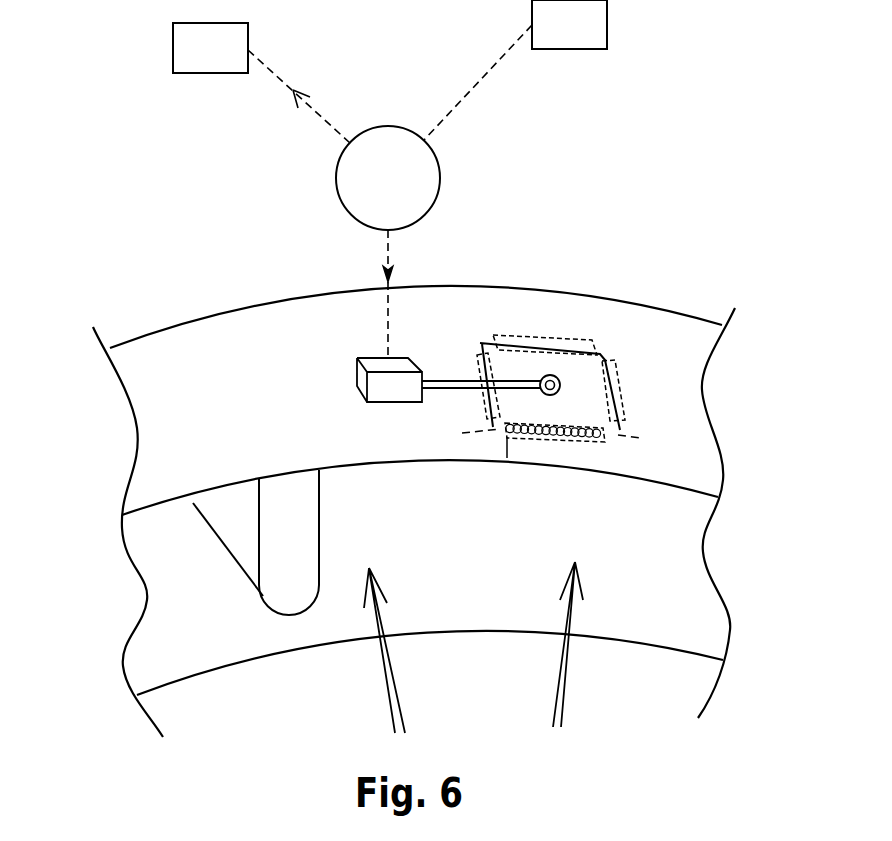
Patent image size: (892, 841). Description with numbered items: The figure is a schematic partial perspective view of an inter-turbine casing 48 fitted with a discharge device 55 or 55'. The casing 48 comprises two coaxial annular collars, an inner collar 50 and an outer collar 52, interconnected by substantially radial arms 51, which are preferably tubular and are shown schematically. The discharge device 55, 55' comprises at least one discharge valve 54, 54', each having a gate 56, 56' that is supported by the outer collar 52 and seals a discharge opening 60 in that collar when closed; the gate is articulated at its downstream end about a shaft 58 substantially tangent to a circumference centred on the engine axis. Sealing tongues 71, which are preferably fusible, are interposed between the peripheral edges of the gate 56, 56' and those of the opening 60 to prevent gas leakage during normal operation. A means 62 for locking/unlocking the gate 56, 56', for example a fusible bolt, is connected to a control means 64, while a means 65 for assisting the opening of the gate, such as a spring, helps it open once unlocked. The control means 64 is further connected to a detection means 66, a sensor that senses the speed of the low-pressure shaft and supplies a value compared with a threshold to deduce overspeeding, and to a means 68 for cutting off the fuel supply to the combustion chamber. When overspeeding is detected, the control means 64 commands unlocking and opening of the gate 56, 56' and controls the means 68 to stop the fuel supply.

The inter-turbine casing 48 is at (414, 494).
The inner collar 50 is at (213, 633).
The radial arms 51 is at (297, 585).
The outer collar 52 is at (258, 345).
The discharge valve 54 is at (545, 282).
The discharge valve 54' is at (628, 324).
The discharge device 55 is at (301, 191).
The discharge device 55' is at (301, 191).
The gate 56 is at (640, 386).
The gate 56' is at (640, 386).
The shaft 58 is at (620, 357).
The discharge opening 60 is at (620, 438).
The means for locking/unlocking the gate 62 is at (357, 372).
The control means 64 is at (441, 178).
The means for assisting the opening of the gate 65 is at (507, 443).
The overspeed detection means 66 is at (607, 2).
The means for cutting off the fuel supply 68 is at (173, 37).
The sealing tongues 71 is at (477, 370).